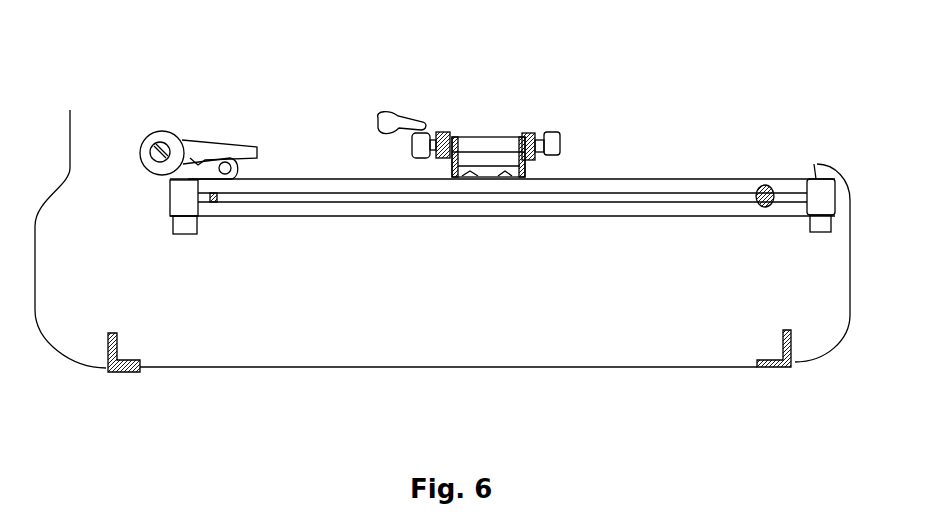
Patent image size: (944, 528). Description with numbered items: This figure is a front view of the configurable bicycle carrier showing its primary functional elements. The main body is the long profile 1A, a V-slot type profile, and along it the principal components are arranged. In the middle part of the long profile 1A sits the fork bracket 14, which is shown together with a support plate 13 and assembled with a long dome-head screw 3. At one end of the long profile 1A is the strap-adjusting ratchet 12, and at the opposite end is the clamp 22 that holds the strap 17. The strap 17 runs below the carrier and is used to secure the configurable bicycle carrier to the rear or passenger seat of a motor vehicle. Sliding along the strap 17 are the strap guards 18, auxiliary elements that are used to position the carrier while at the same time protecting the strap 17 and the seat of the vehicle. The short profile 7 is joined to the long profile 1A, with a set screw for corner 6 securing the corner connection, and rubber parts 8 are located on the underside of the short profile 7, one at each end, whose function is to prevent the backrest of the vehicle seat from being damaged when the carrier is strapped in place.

The long profile 1A is at (650, 179).
The long dome-head screw 3 is at (765, 208).
The set screw for corner 6 is at (213, 203).
The short profile 7 is at (168, 198).
The rubber part 8 is at (184, 234).
The strap-adjusting ratchet 12 is at (215, 143).
The support plate 13 is at (396, 120).
The fork bracket 14 is at (484, 130).
The strap 17 is at (416, 365).
The strap guard 18 is at (128, 372).
The clamp 22 is at (815, 168).